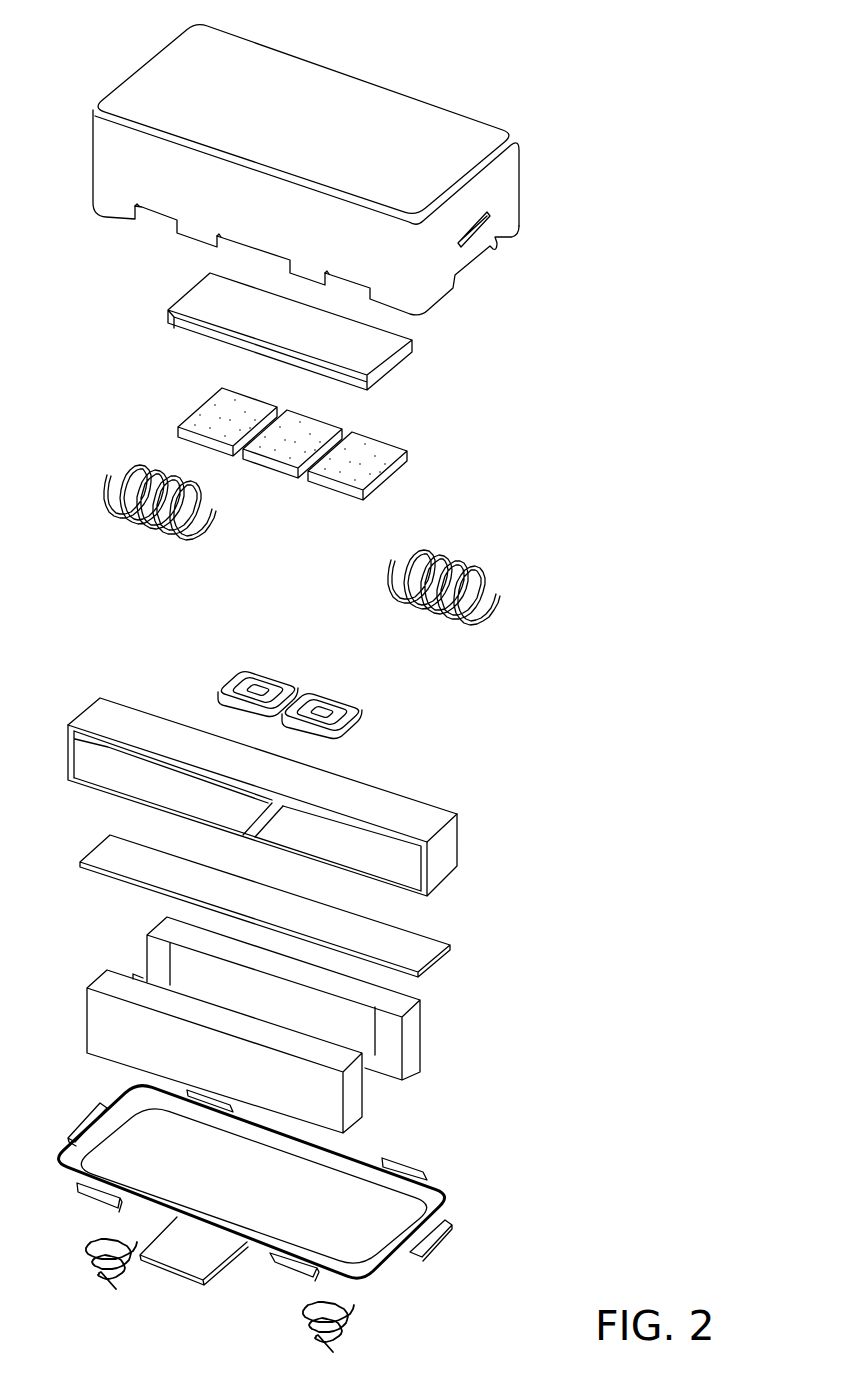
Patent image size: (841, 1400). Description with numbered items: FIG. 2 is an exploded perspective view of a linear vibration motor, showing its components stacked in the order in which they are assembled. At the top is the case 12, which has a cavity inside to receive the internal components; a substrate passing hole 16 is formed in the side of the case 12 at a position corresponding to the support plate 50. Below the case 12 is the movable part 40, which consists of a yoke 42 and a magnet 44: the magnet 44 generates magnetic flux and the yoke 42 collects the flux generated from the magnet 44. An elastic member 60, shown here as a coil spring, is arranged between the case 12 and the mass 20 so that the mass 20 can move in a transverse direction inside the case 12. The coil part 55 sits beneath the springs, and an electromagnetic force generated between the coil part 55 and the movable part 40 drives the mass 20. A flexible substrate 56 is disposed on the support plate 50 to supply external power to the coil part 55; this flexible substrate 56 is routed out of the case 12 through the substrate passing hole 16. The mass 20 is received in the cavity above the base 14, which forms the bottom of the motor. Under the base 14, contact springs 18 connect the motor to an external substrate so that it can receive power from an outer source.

The case 12 is at (322, 95).
The substrate passing hole 16 is at (490, 215).
The movable part 40 is at (451, 387).
The yoke 42 is at (400, 362).
The magnet 44 is at (405, 453).
The elastic member 60 is at (487, 607).
The coil part 55 is at (355, 707).
The flexible substrate 56 is at (445, 842).
The support plate 50 is at (410, 948).
The mass 20 is at (410, 1052).
The base 14 is at (450, 1193).
The contact spring 18 is at (353, 1312).